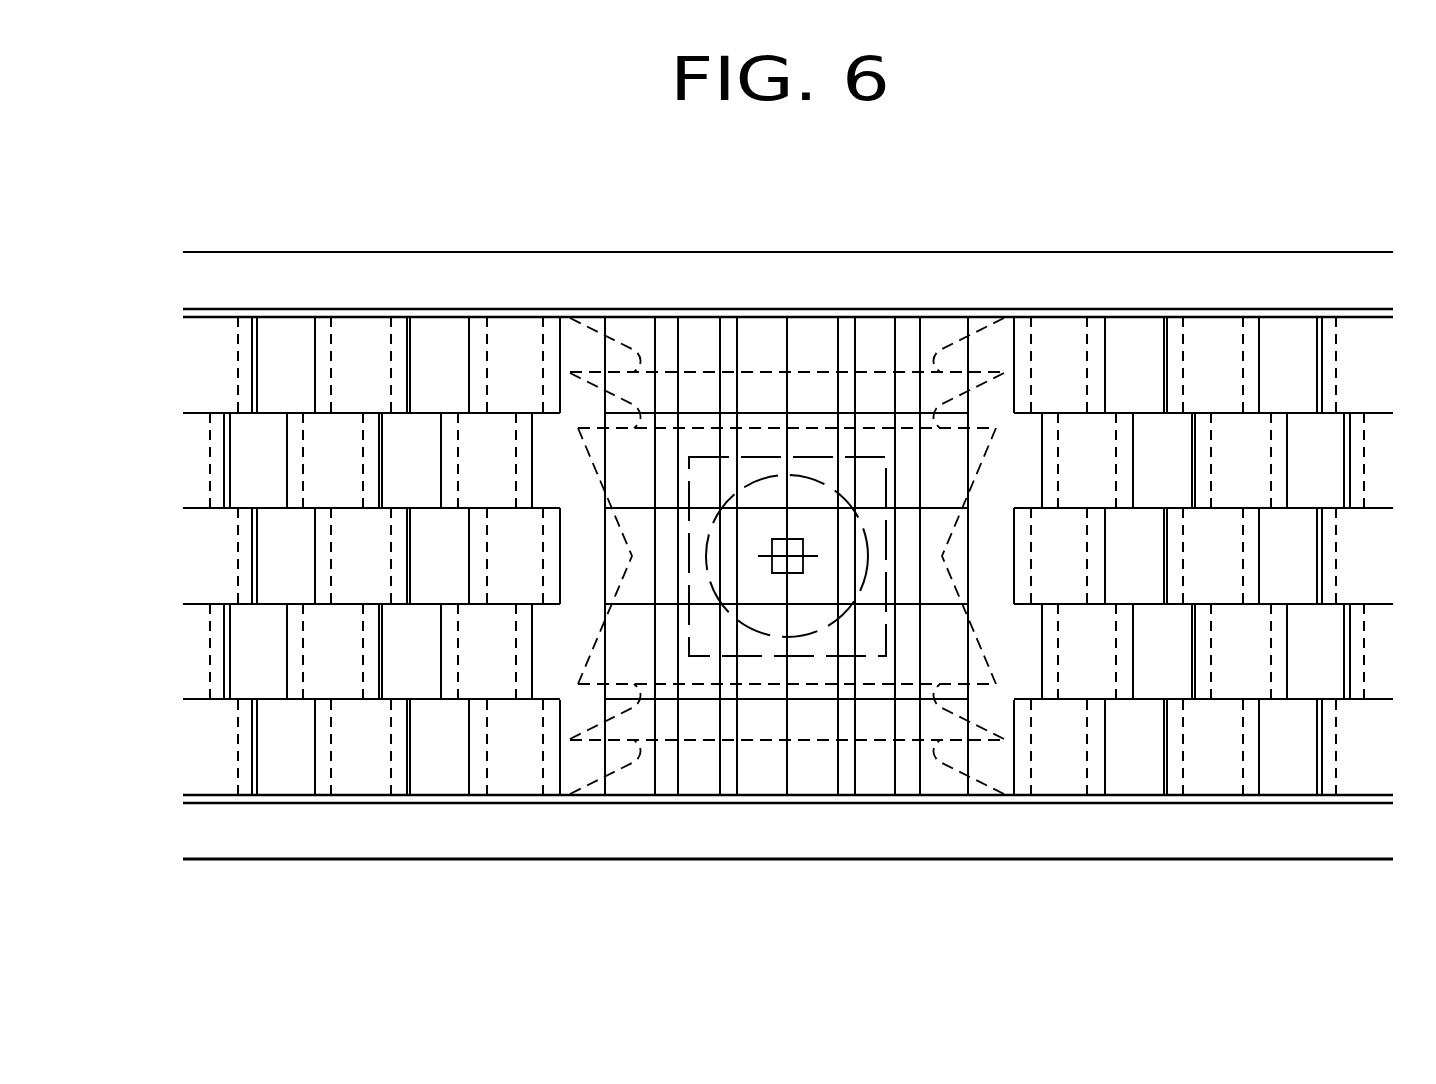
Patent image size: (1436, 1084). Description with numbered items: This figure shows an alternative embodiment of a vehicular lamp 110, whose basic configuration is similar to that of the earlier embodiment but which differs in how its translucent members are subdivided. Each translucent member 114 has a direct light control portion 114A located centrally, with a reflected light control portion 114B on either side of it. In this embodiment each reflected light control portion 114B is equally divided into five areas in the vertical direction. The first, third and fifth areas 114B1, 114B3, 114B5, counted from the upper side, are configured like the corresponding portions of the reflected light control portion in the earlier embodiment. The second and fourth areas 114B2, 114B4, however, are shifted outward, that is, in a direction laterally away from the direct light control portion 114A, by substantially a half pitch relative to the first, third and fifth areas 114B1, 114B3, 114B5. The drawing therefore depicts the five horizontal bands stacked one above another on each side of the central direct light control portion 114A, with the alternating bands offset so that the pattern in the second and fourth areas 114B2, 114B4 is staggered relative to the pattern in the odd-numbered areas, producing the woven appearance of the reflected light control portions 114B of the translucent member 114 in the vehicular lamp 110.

The vehicular lamp 110 is at (1212, 212).
The translucent member 114 is at (284, 311).
The direct light control portion 114A is at (975, 833).
The reflected light control portion 114B is at (788, 548).
The first area 114B1 is at (527, 358).
The second area 114B2 is at (497, 455).
The third area 114B3 is at (540, 550).
The fourth area 114B4 is at (497, 657).
The fifth area 114B5 is at (740, 750).